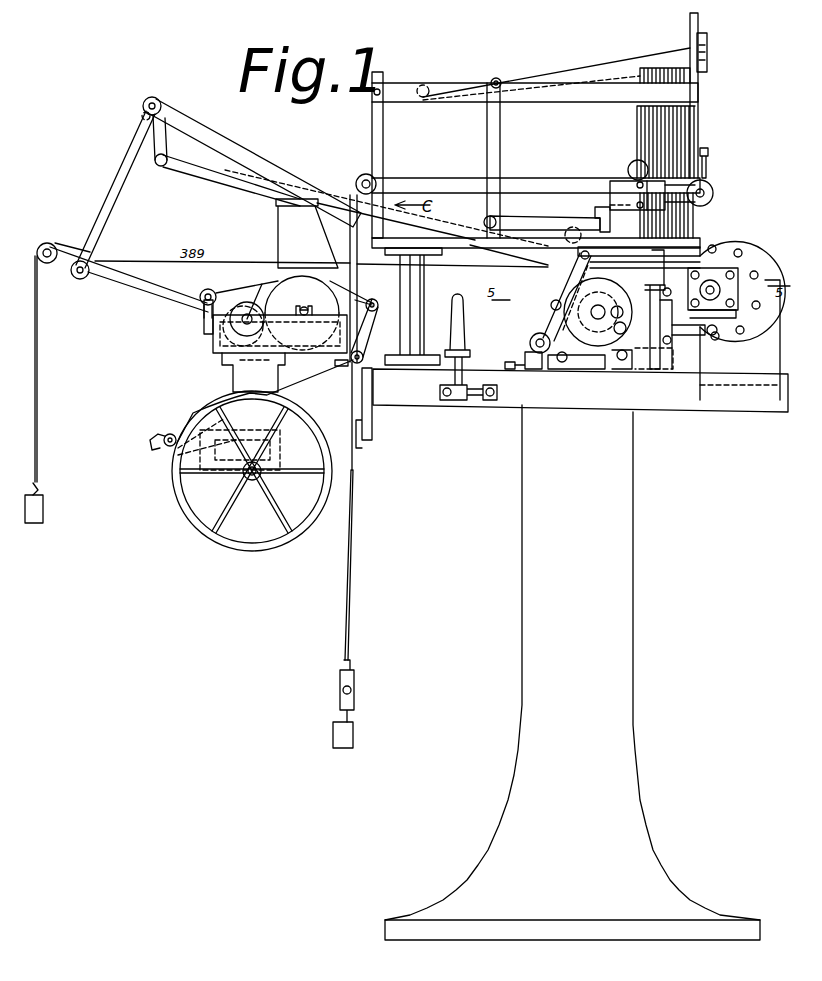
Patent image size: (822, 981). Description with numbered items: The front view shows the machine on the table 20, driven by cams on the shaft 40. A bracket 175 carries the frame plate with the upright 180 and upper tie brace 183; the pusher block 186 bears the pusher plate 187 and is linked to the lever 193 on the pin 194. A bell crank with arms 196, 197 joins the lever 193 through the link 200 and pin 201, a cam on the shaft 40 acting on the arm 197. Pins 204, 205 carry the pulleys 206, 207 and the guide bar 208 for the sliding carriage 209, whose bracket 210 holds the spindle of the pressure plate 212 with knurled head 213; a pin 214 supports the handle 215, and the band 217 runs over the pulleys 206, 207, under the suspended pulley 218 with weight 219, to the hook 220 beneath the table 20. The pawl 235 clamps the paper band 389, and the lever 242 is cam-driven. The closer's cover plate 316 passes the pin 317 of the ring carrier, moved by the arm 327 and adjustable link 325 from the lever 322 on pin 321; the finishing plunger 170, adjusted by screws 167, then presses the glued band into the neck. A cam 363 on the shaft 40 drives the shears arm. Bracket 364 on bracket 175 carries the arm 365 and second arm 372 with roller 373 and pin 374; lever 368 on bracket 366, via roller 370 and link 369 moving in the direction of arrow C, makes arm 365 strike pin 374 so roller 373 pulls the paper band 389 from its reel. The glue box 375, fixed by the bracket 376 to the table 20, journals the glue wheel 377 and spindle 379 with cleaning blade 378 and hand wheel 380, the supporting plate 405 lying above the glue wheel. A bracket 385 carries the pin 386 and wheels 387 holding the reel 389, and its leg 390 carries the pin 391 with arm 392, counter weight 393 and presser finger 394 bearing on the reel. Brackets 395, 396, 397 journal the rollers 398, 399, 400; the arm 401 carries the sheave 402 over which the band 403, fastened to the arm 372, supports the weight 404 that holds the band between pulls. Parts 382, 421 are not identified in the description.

The table 20 is at (686, 410).
The shaft 40 is at (598, 319).
The screws 167 is at (740, 268).
The finishing plunger 170 is at (740, 285).
The bracket 175 is at (450, 278).
The upright 180 is at (372, 122).
The upper tie brace 183 is at (535, 93).
The pusher block 186 is at (707, 44).
The pusher plate 187 is at (690, 28).
The lever 193 is at (547, 72).
The pin 194 is at (425, 85).
The arm 196 is at (542, 216).
The arm 197 is at (560, 285).
The link 200 is at (500, 120).
The pin 201 is at (497, 78).
The pin 204 is at (713, 194).
The pin 205 is at (357, 183).
The pulley 206 is at (708, 180).
The pulley 207 is at (361, 176).
The guide bar 208 is at (572, 222).
The sliding carriage 209 is at (614, 181).
The bracket 210 is at (657, 195).
The pressure plate 212 is at (637, 118).
The knurled head 213 is at (633, 162).
The pin 214 is at (626, 195).
The handle 215 is at (594, 219).
The band 217 is at (556, 178).
The suspended pulley 218 is at (354, 675).
The weight 219 is at (353, 737).
The hook 220 is at (372, 425).
The pawl 235 is at (639, 258).
The lever 242 is at (538, 335).
The cover plate 316 is at (732, 253).
The pin 317 is at (712, 318).
The pin 321 is at (622, 362).
The lever 322 is at (649, 327).
The adjustable link 325 is at (656, 309).
The arm 327 is at (714, 336).
The cam 363 is at (595, 348).
The bracket 364 is at (205, 120).
The arm 365 is at (158, 166).
The bracket 366 is at (513, 360).
The lever 368 is at (525, 342).
The link 369 is at (240, 188).
The roller 370 is at (551, 307).
The second arm 372 is at (115, 186).
The roller 373 is at (78, 280).
The pin 374 is at (140, 118).
The glue box 375 is at (213, 345).
The bracket 376 is at (360, 375).
The glue wheel 377 is at (302, 313).
The cleaning blade 378 is at (262, 290).
The spindle 379 is at (253, 323).
The hand wheel 380 is at (247, 308).
The bar 382 is at (321, 261).
The bracket 385 is at (253, 372).
The pin 386 is at (262, 477).
The wheels 387 is at (176, 505).
The paper band 389 is at (248, 543).
The leg 390 is at (222, 471).
The pin 391 is at (165, 435).
The arm 392 is at (178, 455).
The counter weight 393 is at (237, 450).
The presser finger 394 is at (188, 420).
The bracket 395 is at (335, 364).
The bracket 396 is at (370, 299).
The bracket 397 is at (204, 326).
The roller 398 is at (362, 355).
The roller 399 is at (383, 299).
The roller 400 is at (202, 293).
The arm 401 is at (130, 250).
The sheave 402 is at (48, 242).
The band 403 is at (37, 388).
The weight 404 is at (45, 512).
The supporting plate 405 is at (278, 240).
The comb 421 is at (650, 68).